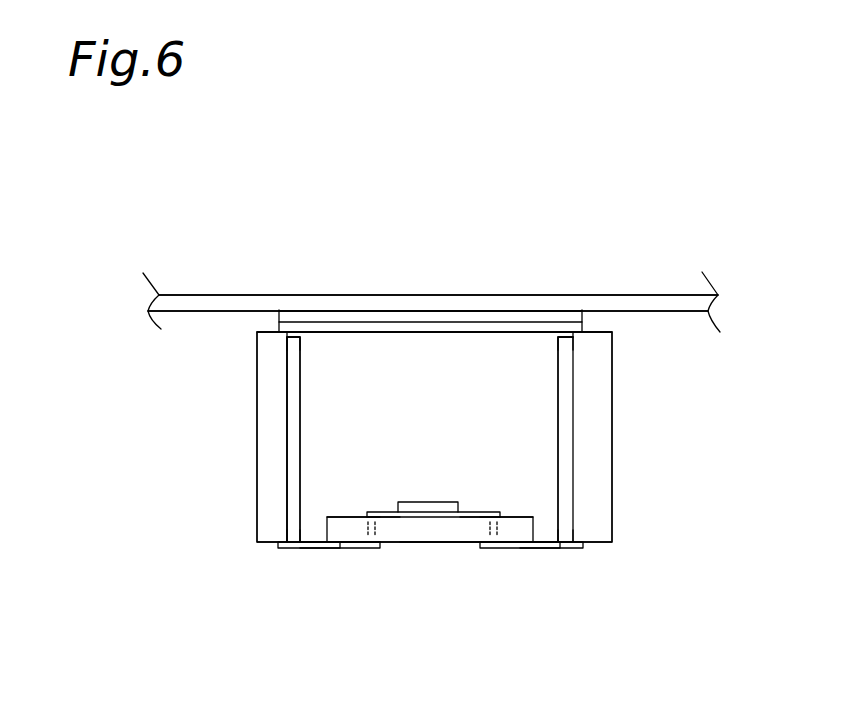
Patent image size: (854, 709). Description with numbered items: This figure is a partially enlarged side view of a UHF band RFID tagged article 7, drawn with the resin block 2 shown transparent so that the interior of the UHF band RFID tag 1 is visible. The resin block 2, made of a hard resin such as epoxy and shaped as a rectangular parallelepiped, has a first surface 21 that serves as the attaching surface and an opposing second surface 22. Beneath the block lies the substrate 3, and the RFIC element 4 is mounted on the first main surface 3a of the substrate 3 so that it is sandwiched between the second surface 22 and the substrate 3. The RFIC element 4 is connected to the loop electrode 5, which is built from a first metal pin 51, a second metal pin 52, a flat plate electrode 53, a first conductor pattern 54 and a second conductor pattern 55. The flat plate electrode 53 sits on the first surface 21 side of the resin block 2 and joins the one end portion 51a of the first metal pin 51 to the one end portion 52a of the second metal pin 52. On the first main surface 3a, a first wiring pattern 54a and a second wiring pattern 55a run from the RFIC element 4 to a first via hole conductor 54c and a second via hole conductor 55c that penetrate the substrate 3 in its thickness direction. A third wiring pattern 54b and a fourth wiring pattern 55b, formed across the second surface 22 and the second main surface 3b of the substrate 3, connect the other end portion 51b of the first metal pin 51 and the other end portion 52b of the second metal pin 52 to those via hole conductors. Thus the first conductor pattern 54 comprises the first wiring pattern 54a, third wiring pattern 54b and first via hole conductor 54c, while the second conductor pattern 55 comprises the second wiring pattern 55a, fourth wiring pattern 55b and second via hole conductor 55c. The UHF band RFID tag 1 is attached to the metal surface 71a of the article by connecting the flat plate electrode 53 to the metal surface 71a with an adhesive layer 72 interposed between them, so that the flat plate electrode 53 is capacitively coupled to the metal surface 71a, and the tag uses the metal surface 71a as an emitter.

The UHF band RFID tag 1 is at (200, 460).
The resin block 2 is at (602, 385).
The first surface 21 is at (598, 328).
The second surface 22 is at (600, 547).
The substrate 3 is at (337, 527).
The first main surface 3a is at (523, 515).
The second main surface 3b is at (453, 542).
The RFIC element 4 is at (432, 512).
The loop electrode 5 is at (600, 414).
The first metal pin 51 is at (292, 412).
The one end portion of the first metal pin 51a is at (292, 338).
The other end portion of the first metal pin 51b is at (292, 537).
The second metal pin 52 is at (567, 441).
The one end portion of the second metal pin 52a is at (567, 337).
The other end portion of the second metal pin 52b is at (566, 538).
The flat plate electrode 53 is at (316, 322).
The first conductor pattern 54 is at (417, 638).
The first wiring pattern 54a is at (392, 517).
The third wiring pattern 54b is at (320, 546).
The first via hole conductor 54c is at (362, 530).
The second conductor pattern 55 is at (658, 638).
The second wiring pattern 55a is at (470, 517).
The fourth wiring pattern 55b is at (547, 548).
The second via hole conductor 55c is at (507, 533).
The UHF band RFID tagged article 7 is at (173, 204).
The metal surface 71a is at (650, 302).
The adhesive layer 72 is at (512, 315).